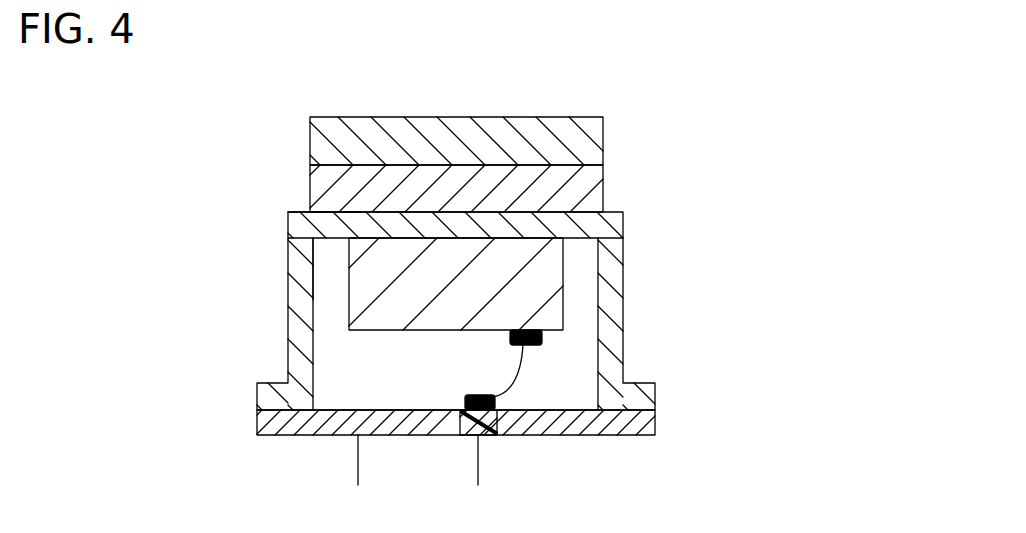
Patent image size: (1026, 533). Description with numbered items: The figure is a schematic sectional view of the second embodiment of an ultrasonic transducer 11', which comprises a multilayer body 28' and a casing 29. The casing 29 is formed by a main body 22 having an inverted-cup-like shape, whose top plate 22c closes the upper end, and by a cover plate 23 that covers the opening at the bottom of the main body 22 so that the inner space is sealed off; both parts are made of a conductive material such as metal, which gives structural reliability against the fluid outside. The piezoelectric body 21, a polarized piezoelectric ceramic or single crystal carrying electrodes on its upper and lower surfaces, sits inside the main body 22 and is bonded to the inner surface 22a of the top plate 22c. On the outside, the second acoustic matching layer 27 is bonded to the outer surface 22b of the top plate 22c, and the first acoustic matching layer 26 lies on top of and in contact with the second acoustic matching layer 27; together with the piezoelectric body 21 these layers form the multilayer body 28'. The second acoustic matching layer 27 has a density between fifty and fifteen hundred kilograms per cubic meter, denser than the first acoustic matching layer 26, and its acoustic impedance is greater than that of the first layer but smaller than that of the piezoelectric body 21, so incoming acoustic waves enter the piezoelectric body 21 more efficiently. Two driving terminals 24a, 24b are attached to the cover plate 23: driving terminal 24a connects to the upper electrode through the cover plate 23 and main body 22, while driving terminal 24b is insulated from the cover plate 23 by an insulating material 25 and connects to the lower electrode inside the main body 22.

The vibration device 11' is at (499, 280).
The piezoelectric body 21 is at (552, 262).
The main body 22 is at (615, 362).
The inner surface 22a is at (327, 242).
The outer surface 22b is at (357, 208).
The lid portion 22c is at (470, 222).
The cover plate 23 is at (640, 427).
The driving terminal 24a is at (357, 442).
The driving terminal 24b is at (483, 467).
The insulating material 25 is at (498, 415).
The first acoustic matching layer 26 is at (582, 138).
The second acoustic matching layer 27 is at (585, 180).
The multilayer body 28' is at (569, 119).
The casing 29 is at (785, 315).